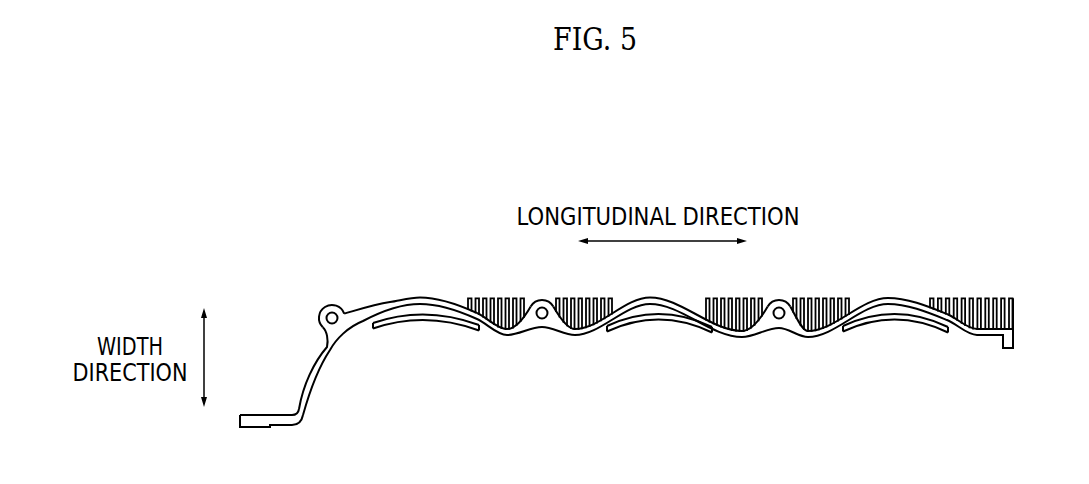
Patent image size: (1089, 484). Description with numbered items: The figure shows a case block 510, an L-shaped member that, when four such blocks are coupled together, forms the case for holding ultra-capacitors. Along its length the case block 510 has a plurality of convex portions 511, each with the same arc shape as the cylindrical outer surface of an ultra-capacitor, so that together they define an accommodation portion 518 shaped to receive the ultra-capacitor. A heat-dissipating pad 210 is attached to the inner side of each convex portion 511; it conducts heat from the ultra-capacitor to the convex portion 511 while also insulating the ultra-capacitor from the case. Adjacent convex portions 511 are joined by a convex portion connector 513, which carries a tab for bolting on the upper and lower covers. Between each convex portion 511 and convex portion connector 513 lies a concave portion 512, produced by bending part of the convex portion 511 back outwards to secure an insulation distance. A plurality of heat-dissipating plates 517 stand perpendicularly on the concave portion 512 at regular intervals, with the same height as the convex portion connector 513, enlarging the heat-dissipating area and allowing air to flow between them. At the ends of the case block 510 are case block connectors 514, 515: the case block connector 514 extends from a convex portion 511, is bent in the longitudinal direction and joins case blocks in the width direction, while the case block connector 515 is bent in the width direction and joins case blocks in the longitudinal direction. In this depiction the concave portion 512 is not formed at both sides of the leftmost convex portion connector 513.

The case block 510 is at (371, 220).
The convex portion 511 is at (307, 373).
The concave portion 512 is at (505, 338).
The convex portion connector 513 is at (331, 304).
The case block connector 514 is at (250, 414).
The case block connector 515 is at (1015, 340).
The heat-dissipating plate 517 is at (490, 298).
The accommodation portion 518 is at (483, 332).
The heat-dissipating pad 210 is at (419, 321).